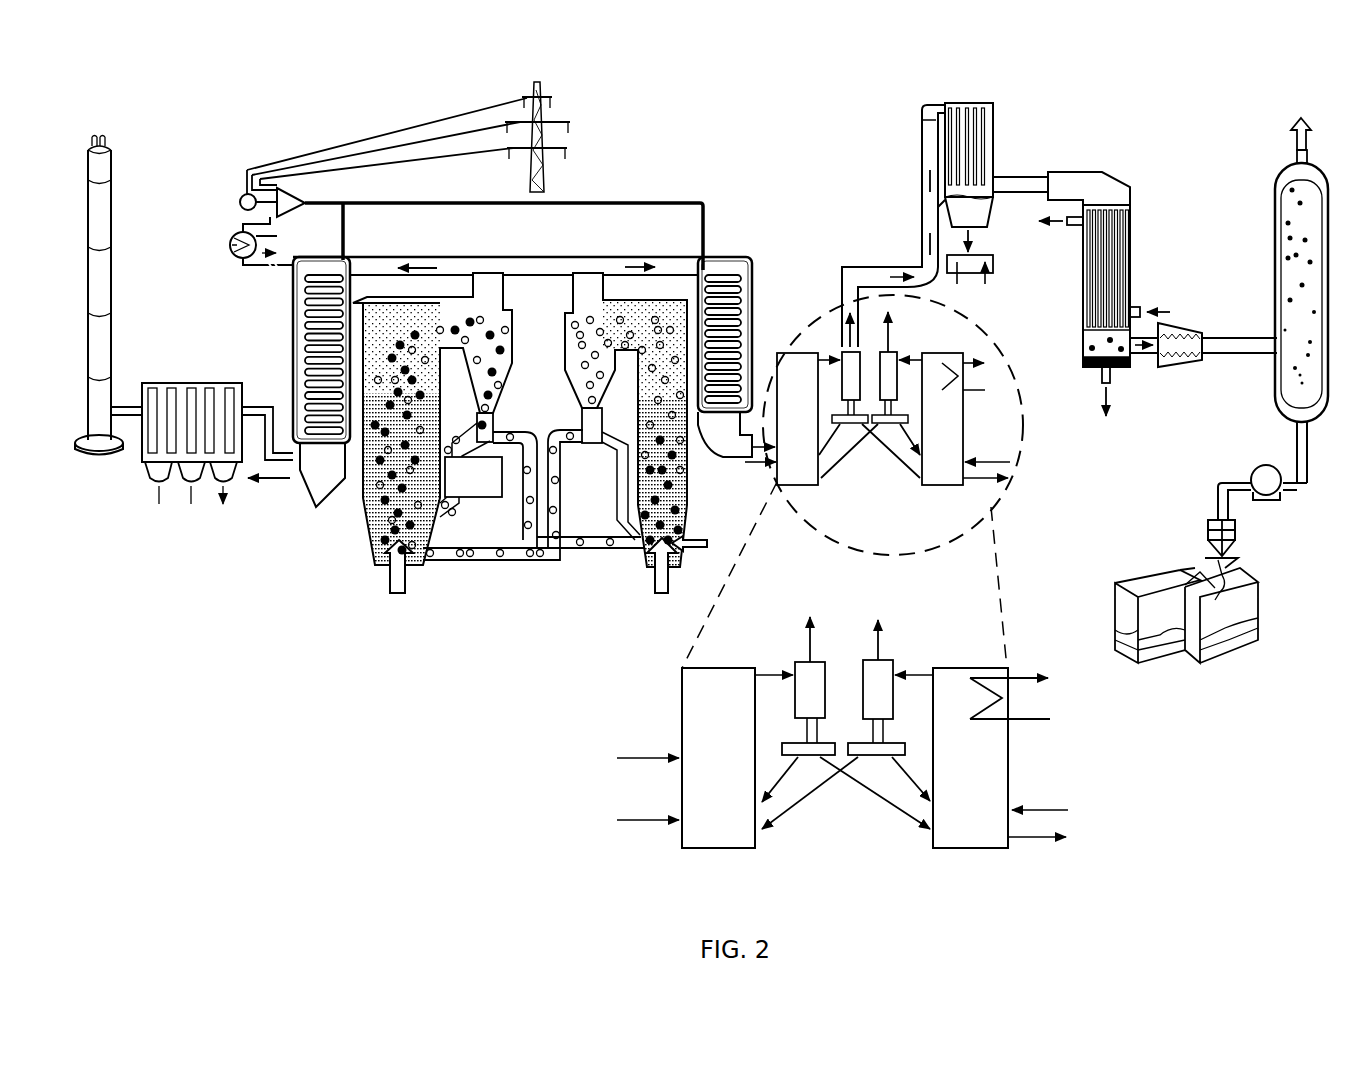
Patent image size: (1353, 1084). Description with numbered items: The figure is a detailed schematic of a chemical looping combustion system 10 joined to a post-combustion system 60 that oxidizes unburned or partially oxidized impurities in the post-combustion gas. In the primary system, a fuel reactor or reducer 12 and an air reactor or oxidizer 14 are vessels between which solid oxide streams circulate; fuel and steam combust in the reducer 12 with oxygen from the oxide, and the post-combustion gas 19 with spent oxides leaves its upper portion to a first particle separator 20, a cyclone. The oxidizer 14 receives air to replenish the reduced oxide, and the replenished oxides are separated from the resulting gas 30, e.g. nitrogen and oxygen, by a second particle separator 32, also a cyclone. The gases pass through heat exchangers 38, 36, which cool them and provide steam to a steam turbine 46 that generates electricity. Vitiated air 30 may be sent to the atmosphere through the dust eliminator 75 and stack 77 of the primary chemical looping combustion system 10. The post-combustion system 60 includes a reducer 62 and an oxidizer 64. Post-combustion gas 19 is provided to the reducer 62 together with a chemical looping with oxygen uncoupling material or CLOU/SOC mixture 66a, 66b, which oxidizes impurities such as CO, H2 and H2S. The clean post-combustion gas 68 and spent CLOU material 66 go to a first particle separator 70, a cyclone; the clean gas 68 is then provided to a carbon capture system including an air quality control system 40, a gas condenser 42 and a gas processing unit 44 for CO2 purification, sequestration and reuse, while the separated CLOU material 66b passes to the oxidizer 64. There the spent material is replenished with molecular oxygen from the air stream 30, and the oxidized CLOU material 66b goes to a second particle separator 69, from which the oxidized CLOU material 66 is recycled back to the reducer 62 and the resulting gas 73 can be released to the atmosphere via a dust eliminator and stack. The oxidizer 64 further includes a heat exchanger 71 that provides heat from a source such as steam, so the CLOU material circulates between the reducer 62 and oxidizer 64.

The chemical looping combustion system 10 is at (737, 128).
The fuel reactor/reducer 12 is at (688, 506).
The air reactor/oxidizer 14 is at (363, 515).
The post-combustion gas 19 is at (617, 822).
The first particle separator 20 is at (560, 322).
The resulting gas 30 is at (267, 484).
The second particle separator 32 is at (500, 388).
The heat exchanger 36 is at (737, 268).
The heat exchanger 38 is at (318, 262).
The air quality control system 40 is at (970, 102).
The gas condenser 42 is at (1090, 172).
The gas-processing unit 44 is at (1302, 116).
The steam turbine 46 is at (305, 192).
The post-combustion system 60 is at (937, 556).
The reducer 62 is at (682, 695).
The oxidizer 64 is at (1010, 773).
The CLOU material 66 is at (617, 760).
The CLOU material or CLOU/SOC mixture 66a is at (850, 470).
The separated CLOU material 66b is at (890, 470).
The clean post-combustion gas 68 is at (815, 655).
The second particle separator 69 is at (890, 658).
The first particle separator 70 is at (796, 662).
The heat exchanger 71 is at (1023, 668).
The resulting gas 73 is at (872, 618).
The dust eliminator 75 is at (190, 383).
The stack 77 is at (113, 180).